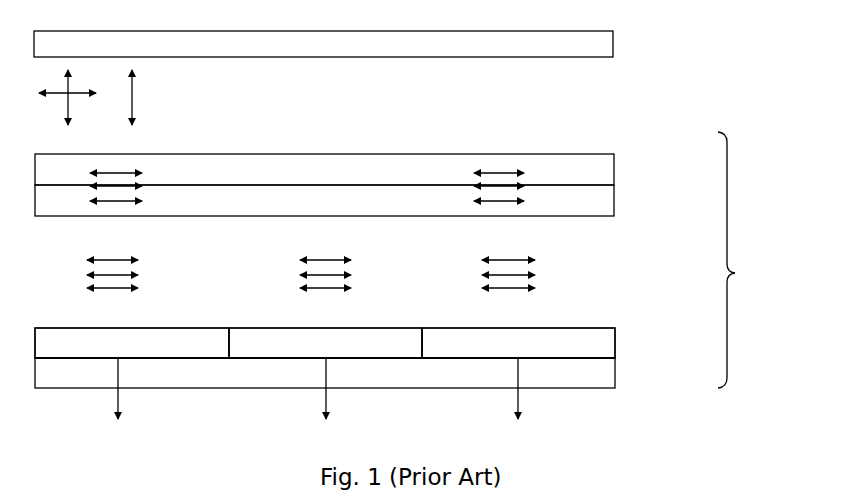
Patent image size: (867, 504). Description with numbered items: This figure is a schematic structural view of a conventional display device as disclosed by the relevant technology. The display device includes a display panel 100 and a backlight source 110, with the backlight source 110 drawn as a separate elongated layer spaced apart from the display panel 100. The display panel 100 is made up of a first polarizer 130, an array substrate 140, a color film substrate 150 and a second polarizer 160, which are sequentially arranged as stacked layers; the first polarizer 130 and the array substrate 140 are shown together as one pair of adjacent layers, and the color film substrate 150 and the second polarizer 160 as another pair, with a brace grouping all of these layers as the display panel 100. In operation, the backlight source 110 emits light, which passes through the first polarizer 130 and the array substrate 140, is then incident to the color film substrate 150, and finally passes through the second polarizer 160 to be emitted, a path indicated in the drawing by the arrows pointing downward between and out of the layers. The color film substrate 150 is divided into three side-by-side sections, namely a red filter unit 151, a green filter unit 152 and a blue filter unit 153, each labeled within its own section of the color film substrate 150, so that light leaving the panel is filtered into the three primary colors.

The display panel 100 is at (751, 260).
The backlight source 110 is at (613, 44).
The first polarizer 130 is at (606, 173).
The array substrate 140 is at (603, 202).
The color film substrate 150 is at (602, 342).
The red filter unit 151 is at (132, 343).
The green filter unit 152 is at (325, 343).
The blue filter unit 153 is at (518, 343).
The second polarizer 160 is at (605, 377).